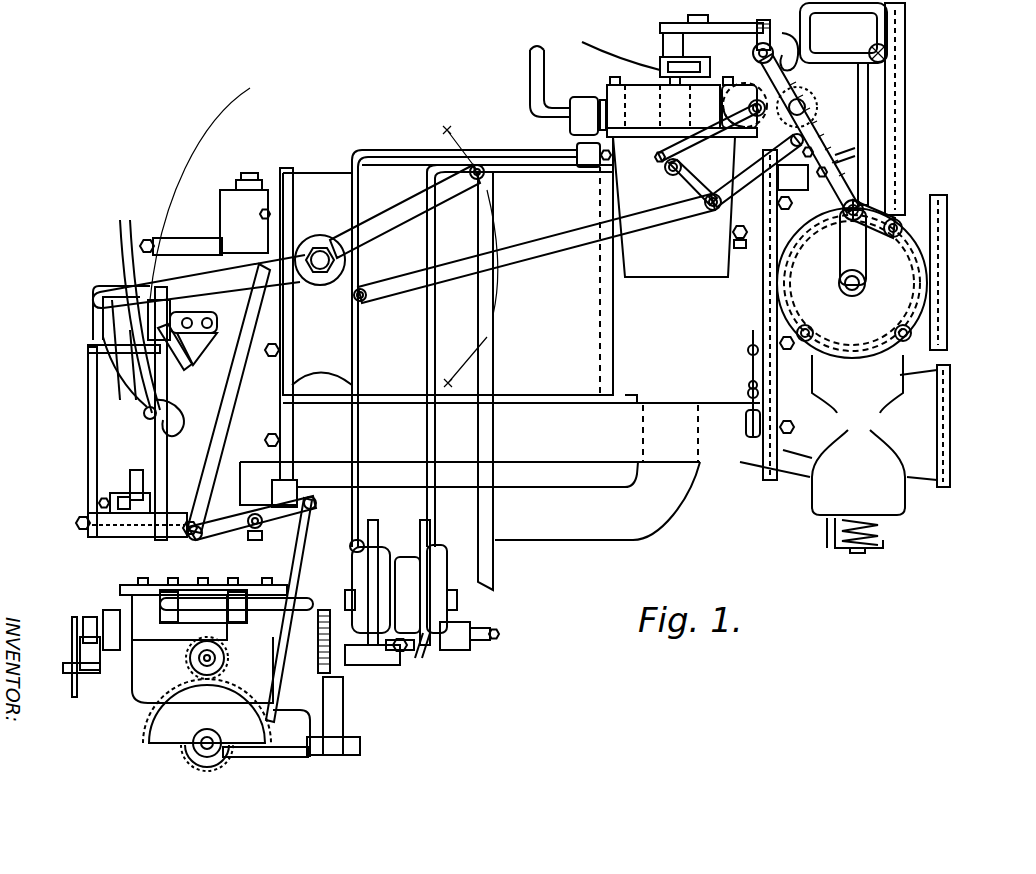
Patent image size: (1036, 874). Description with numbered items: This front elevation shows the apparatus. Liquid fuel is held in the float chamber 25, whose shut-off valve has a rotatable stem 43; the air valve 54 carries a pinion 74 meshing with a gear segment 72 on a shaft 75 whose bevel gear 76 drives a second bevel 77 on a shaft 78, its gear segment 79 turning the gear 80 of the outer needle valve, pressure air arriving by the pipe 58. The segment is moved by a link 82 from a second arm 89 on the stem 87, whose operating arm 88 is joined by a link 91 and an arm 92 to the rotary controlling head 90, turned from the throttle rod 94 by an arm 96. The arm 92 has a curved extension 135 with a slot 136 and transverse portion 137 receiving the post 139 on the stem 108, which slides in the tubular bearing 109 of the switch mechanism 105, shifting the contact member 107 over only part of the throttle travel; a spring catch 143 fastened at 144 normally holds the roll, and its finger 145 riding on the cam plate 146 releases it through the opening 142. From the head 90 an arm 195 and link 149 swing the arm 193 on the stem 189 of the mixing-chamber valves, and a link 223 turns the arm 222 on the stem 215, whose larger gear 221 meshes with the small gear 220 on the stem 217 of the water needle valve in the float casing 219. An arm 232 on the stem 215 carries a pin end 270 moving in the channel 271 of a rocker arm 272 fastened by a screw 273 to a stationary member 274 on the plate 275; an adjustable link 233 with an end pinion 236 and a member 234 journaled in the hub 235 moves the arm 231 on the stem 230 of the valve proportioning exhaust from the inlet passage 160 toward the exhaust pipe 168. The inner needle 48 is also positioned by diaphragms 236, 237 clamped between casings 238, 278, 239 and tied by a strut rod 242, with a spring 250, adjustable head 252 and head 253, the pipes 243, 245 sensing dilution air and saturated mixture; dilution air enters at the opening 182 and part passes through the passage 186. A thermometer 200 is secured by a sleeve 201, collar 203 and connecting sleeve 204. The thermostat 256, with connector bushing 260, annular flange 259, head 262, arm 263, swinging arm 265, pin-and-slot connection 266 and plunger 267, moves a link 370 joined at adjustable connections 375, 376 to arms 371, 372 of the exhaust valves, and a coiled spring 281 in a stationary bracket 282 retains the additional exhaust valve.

The opening 142 is at (126, 306).
The transverse portion 137 is at (105, 286).
The tubular bearing 109 is at (117, 337).
The slot 136 is at (100, 350).
The curved extension 135 is at (117, 358).
The spring catch 143 is at (146, 410).
The switch mechanism 105 is at (108, 427).
The fastening point 144 is at (146, 426).
The stem 108 is at (130, 478).
The contact member 107 is at (110, 505).
The rotatable stem 43 is at (84, 616).
The float chamber 25 is at (160, 685).
The air valve 54 is at (186, 658).
The pinion 74 is at (218, 656).
The gear segment 72 is at (222, 706).
The shaft 75 is at (214, 730).
The bevel gear 76 is at (186, 760).
The second bevel gear 77 is at (262, 758).
The shaft 78 is at (291, 733).
The gear segment 79 is at (342, 706).
The gear 80 is at (334, 632).
The pipe 58 is at (247, 590).
The link 82 is at (294, 572).
The stem 87 is at (233, 530).
The operating arm 88 is at (255, 513).
The second arm 89 is at (295, 487).
The link 91 is at (232, 404).
The arm 92 is at (252, 265).
The post 139 is at (199, 281).
The finger 145 is at (165, 316).
The cam plate 146 is at (194, 372).
The rotary controlling head 90 is at (303, 248).
The arm 195 is at (345, 298).
The opening 182 is at (300, 392).
The arm 96 is at (380, 226).
The pipe 245 is at (360, 342).
The pipe 243 is at (428, 372).
The link 149 is at (518, 256).
The throttle rod 94 is at (492, 330).
The casing 239 is at (356, 566).
The diaphragm 237 is at (384, 568).
The diaphragm 236 is at (752, 53).
The casing 278 is at (402, 556).
The casing 238 is at (440, 580).
The inner needle valve 48 is at (403, 658).
The strut rod 242 is at (426, 662).
The spring 250 is at (455, 650).
The adjustable head 252 is at (486, 641).
The head 253 is at (370, 665).
The passage 186 is at (636, 548).
The thermometer 200 is at (528, 76).
The connecting sleeve 204 is at (572, 97).
The collar 203 is at (585, 110).
The sleeve 201 is at (575, 150).
The annular flange 259 is at (640, 82).
The connector bushing 260 is at (680, 86).
The thermostat 256 is at (722, 92).
The head 262 is at (612, 55).
The arm 263 is at (662, 48).
The swinging arm 265 is at (667, 62).
The pin and slot connection 266 is at (690, 32).
The plunger 267 is at (712, 28).
The pin end 270 is at (760, 22).
The channel 271 is at (786, 32).
The rocker arm 272 is at (843, 33).
The screw 273 is at (888, 52).
The stationary member 274 is at (870, 97).
The adjustable link 233 is at (862, 127).
The float casing 219 is at (845, 152).
The member 234 is at (866, 205).
The hub 235 is at (882, 215).
The inlet passage 160 is at (950, 240).
The arm 232 is at (790, 92).
The stem 217 is at (805, 110).
The small gear 220 is at (806, 145).
The arm 222 is at (820, 165).
The stem 215 is at (654, 157).
The valve stem 189 is at (664, 170).
The arm 193 is at (690, 186).
The larger gear 221 is at (745, 128).
The link 223 is at (730, 214).
The arm 371 is at (735, 246).
The link 370 is at (762, 300).
The adjustable connection 375 is at (795, 177).
The stem 230 is at (865, 276).
The arm 231 is at (839, 285).
The plate 275 is at (852, 361).
The arm 372 is at (745, 380).
The adjustable connection 376 is at (757, 385).
The exhaust pipe 168 is at (950, 393).
The coiled spring 281 is at (880, 531).
The stationary bracket 282 is at (830, 540).